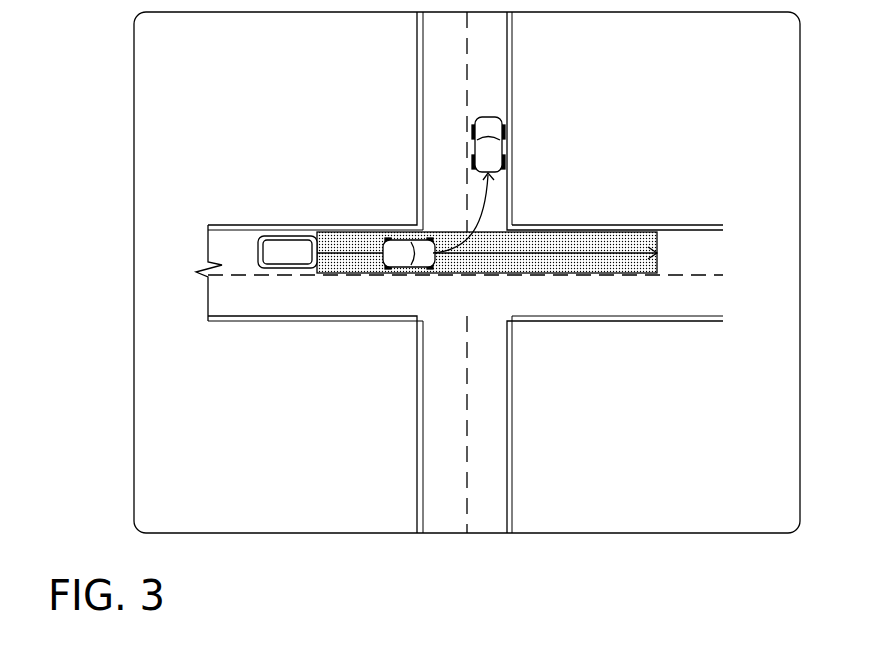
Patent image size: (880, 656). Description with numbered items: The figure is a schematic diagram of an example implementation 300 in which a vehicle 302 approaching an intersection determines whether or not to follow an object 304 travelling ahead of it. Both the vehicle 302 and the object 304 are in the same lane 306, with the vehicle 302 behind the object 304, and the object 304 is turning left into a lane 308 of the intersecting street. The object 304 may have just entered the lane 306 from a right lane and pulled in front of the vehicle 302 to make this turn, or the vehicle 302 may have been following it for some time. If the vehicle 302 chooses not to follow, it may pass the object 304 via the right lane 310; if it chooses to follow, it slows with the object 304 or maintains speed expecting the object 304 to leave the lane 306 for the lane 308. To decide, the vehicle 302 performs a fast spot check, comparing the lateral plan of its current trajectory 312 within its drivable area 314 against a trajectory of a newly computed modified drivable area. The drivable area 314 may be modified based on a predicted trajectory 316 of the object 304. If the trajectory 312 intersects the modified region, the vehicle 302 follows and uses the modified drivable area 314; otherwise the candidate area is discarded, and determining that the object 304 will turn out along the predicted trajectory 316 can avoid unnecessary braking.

The example implementation 300 is at (112, 101).
The vehicle 302 is at (288, 236).
The object 304 is at (404, 240).
The lane 306 is at (253, 262).
The lane of intersecting street 308 is at (505, 82).
The right lane 310 is at (258, 310).
The trajectory 312 is at (360, 253).
The drivable area 314 is at (588, 230).
The predicted trajectory 316 is at (483, 203).